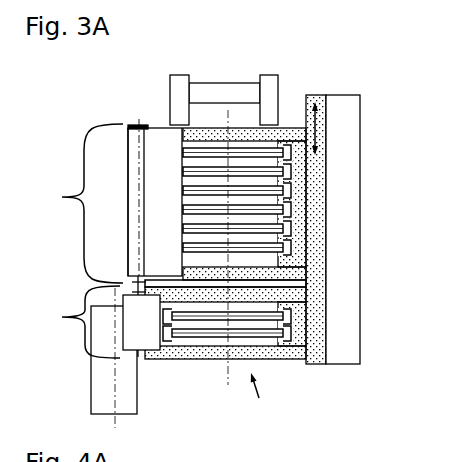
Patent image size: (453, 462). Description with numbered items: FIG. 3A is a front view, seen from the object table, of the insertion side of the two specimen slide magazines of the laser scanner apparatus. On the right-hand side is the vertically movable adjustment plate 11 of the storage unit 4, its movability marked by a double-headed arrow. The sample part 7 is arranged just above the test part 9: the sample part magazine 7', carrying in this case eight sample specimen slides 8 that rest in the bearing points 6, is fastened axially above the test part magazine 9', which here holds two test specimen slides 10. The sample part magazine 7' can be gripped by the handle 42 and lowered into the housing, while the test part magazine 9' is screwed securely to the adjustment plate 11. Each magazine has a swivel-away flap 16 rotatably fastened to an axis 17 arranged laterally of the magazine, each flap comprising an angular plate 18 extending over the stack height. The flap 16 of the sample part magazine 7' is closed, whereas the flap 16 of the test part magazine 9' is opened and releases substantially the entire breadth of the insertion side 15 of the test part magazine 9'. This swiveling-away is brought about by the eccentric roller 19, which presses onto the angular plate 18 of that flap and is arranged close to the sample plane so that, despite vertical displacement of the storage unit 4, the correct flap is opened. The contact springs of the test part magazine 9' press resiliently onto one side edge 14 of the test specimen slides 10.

The storage unit 4 is at (80, 113).
The handle 42 is at (207, 88).
The sample specimen slides 8 is at (262, 157).
The adjustment plate 11 is at (317, 178).
The bearing points 6 is at (327, 150).
The sample part 7 is at (72, 203).
The angular plate 18 is at (132, 193).
The swivel-away flap 16 is at (175, 205).
The axis 17 is at (140, 264).
The test part 9 is at (71, 322).
The eccentric roller 19 is at (117, 397).
The side edge 14 is at (170, 343).
The test specimen slides 10 is at (205, 315).
The insertion side 15 is at (264, 398).
The sample part magazine 7' is at (299, 290).
The test part magazine 9' is at (299, 360).